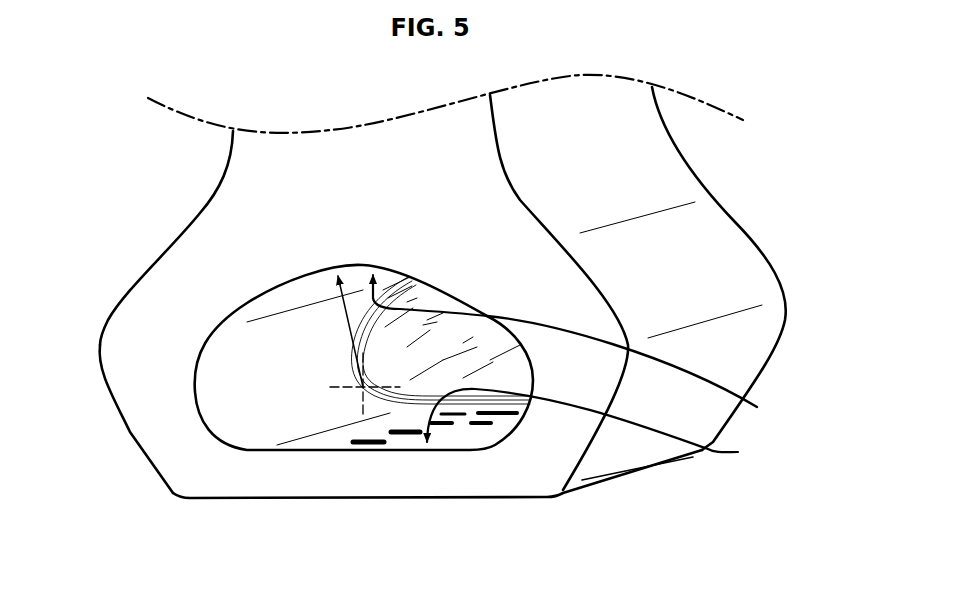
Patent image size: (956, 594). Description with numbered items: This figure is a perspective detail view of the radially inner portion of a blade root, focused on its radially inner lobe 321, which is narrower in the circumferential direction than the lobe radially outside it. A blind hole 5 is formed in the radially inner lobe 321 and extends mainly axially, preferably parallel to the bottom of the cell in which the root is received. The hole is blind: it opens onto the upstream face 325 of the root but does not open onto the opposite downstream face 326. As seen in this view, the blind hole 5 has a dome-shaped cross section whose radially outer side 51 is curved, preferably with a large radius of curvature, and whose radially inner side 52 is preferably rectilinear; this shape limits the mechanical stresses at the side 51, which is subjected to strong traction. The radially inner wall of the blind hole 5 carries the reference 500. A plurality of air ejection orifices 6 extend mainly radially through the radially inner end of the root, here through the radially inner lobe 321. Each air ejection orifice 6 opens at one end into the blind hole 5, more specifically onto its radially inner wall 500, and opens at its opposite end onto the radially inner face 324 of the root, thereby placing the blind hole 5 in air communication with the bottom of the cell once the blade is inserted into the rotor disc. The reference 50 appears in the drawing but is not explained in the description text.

The downstream face 326 is at (751, 229).
The radially inner lobe 321 is at (127, 431).
The radially inner face 324 is at (376, 506).
The upstream face 325 is at (557, 414).
The recess 50 is at (461, 352).
The radially outer side 51 is at (636, 372).
The radially inner side 52 is at (594, 429).
The radially inner wall 500 is at (462, 427).
The blind hole 5 is at (296, 371).
The air ejection orifices 6 is at (385, 443).